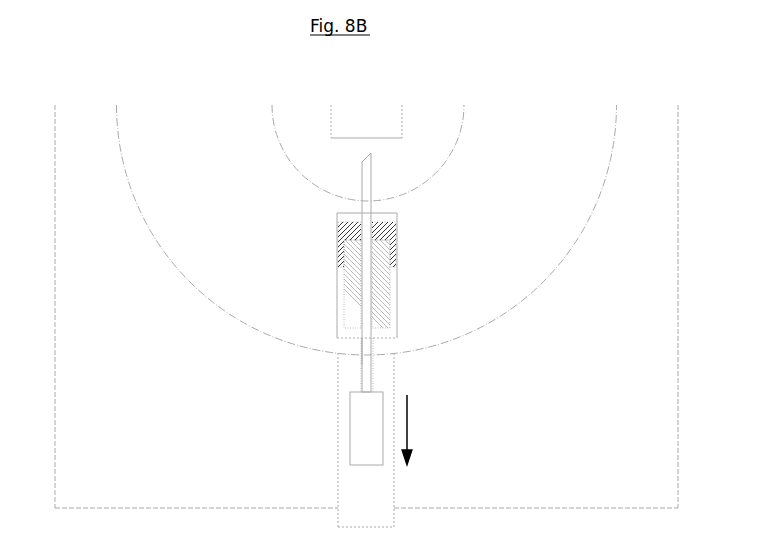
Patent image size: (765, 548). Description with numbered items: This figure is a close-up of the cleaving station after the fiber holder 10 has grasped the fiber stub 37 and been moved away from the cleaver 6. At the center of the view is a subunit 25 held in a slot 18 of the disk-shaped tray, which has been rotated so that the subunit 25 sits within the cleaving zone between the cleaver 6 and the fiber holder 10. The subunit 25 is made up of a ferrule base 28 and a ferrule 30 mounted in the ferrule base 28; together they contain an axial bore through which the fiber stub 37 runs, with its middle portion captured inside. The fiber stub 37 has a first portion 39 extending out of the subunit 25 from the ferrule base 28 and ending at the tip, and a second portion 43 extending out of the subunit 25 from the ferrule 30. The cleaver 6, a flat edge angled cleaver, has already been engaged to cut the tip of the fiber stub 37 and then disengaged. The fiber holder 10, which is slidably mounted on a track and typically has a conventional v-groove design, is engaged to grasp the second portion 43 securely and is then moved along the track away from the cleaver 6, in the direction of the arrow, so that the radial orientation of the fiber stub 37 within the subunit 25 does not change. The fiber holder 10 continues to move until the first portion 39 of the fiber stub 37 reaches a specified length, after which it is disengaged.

The cleaver 6 is at (373, 124).
The fiber holder 10 is at (309, 428).
The slot 18 is at (314, 275).
The subunit 25 is at (319, 242).
The ferrule base 28 is at (390, 242).
The ferrule 30 is at (387, 245).
The fiber stub 37 is at (362, 352).
The first portion 39 is at (378, 272).
The second portion 43 is at (305, 366).